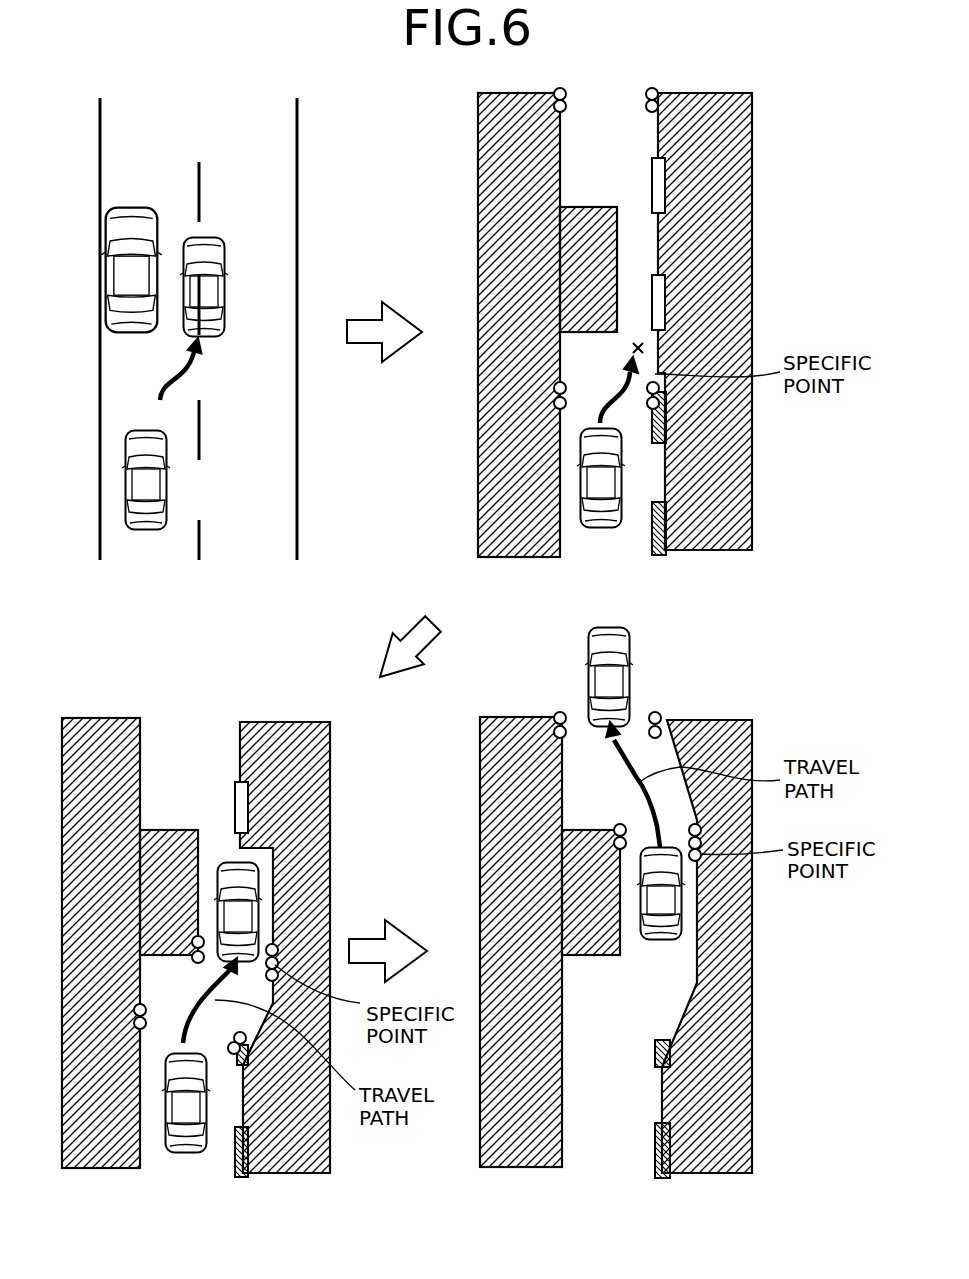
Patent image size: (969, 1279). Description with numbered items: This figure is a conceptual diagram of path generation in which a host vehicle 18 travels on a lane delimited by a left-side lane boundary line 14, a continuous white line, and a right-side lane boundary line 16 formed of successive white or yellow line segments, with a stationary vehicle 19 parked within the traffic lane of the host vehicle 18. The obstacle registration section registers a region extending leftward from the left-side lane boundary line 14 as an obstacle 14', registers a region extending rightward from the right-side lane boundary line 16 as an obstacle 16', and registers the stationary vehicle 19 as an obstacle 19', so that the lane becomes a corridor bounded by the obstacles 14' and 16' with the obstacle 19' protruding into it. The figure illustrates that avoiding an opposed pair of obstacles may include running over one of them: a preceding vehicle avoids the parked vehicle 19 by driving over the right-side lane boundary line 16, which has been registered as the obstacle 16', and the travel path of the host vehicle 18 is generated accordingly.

The left-side lane boundary line 14 is at (70, 341).
The right-side lane boundary line 16 is at (234, 372).
The host vehicle 18 is at (147, 530).
The stationary vehicle 19 is at (101, 270).
The obstacle 14' is at (480, 325).
The obstacle 16' is at (537, 633).
The obstacle 19' is at (480, 620).